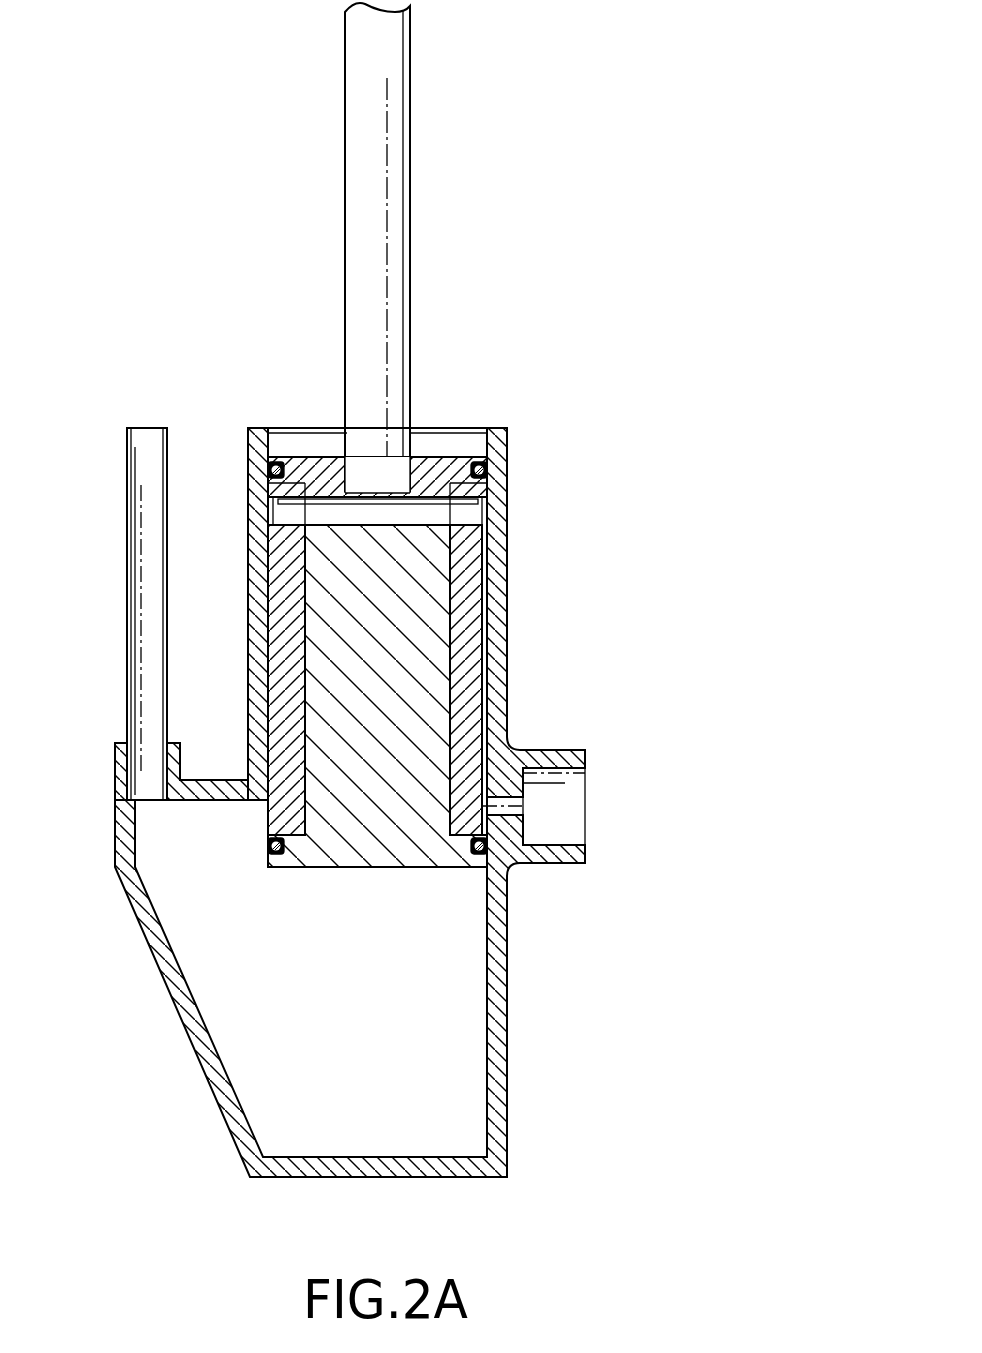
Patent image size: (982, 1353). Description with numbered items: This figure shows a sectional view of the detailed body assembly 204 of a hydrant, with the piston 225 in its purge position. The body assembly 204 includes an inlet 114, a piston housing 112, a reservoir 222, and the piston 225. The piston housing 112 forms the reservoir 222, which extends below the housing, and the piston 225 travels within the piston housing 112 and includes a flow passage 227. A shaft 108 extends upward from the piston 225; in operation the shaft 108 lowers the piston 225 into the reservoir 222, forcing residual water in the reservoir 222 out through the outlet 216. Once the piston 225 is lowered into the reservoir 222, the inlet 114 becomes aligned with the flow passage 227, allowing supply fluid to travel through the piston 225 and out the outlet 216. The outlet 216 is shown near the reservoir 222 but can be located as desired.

The shaft 108 is at (395, 35).
The body assembly 204 is at (662, 310).
The outlet 216 is at (142, 430).
The flow passage 227 is at (285, 508).
The piston housing 112 is at (485, 493).
The piston 225 is at (418, 622).
The inlet 114 is at (585, 802).
The reservoir 222 is at (460, 1023).